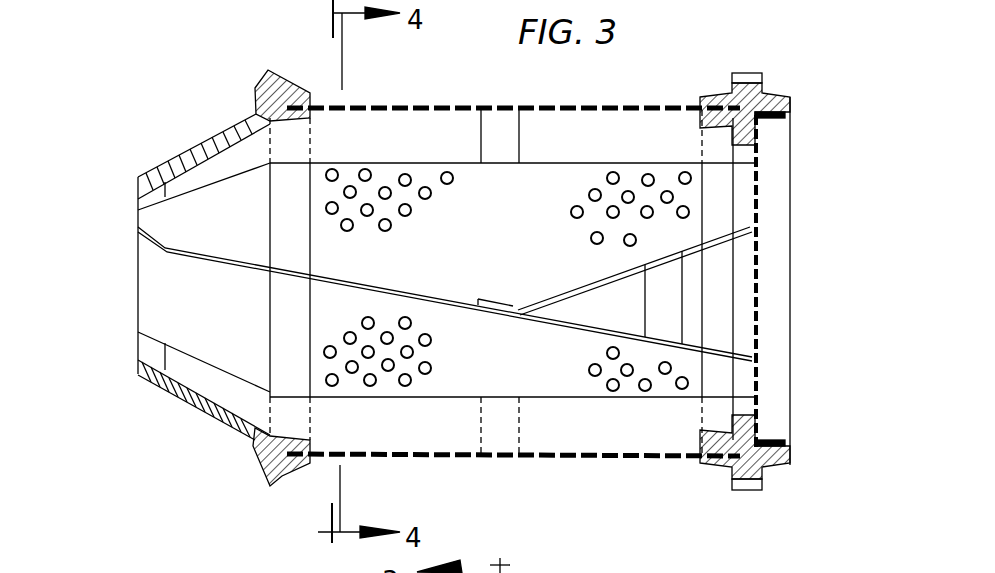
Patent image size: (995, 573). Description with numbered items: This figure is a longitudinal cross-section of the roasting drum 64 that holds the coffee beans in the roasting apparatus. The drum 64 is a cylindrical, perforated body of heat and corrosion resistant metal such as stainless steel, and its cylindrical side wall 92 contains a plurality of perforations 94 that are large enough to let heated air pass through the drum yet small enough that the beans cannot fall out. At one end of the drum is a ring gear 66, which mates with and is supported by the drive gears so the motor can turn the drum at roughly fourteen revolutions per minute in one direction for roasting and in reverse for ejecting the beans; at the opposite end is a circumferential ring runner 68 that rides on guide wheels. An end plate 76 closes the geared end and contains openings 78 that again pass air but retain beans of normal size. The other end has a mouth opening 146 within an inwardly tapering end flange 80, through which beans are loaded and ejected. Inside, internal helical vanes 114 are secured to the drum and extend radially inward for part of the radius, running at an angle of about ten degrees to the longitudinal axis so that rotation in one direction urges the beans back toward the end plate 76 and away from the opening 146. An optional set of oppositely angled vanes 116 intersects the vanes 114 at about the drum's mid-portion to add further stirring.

The roasting drum 64 is at (585, 468).
The ring gear 66 is at (742, 73).
The circumferential ring runner 68 is at (266, 70).
The end plate 76 is at (765, 168).
The opening 78 is at (758, 278).
The inwardly tapering end flange 80 is at (190, 148).
The cylindrical side wall 92 is at (410, 107).
The perforations 94 is at (576, 212).
The internal helical vanes 114 is at (243, 168).
The oppositely angled vanes 116 is at (568, 292).
The opening 146 is at (136, 362).